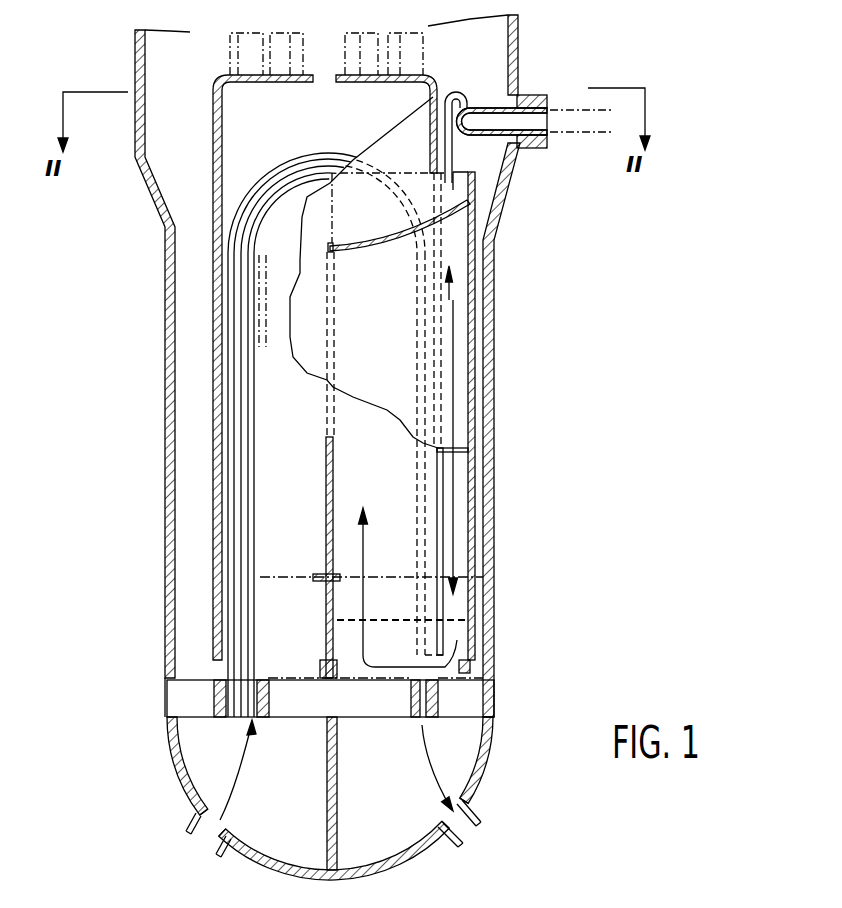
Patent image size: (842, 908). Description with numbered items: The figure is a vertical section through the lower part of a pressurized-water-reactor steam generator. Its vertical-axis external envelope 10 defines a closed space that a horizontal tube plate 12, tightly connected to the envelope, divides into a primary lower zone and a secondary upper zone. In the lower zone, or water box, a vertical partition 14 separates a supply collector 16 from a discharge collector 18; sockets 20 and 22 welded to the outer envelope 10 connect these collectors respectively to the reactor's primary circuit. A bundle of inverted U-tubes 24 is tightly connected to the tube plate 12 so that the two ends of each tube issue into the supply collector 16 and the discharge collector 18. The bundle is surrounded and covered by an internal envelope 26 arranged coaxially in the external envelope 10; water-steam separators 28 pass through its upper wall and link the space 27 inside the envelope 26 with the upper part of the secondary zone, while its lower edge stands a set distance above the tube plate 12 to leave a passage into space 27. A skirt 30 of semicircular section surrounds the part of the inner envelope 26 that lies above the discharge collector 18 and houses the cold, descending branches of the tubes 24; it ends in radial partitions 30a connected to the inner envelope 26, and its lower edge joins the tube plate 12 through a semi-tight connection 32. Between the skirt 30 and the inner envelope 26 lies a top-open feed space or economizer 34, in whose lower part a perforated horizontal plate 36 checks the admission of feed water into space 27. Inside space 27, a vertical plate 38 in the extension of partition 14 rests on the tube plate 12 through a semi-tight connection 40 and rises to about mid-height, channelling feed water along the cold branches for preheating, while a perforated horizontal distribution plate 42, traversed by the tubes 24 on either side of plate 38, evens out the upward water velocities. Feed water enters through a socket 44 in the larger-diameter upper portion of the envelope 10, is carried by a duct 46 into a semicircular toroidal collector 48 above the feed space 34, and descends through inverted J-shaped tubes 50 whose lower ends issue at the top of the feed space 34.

The external envelope 10 is at (165, 357).
The tube plate 12 is at (207, 710).
The vertical partition 14 is at (395, 762).
The supply collector 16 is at (298, 822).
The discharge collector 18 is at (398, 822).
The socket 20 is at (197, 817).
The socket 22 is at (473, 803).
The bundle of inverted U-tubes 24 is at (240, 485).
The internal envelope 26 is at (210, 207).
The space within envelope 26 27 is at (292, 132).
The water-steam separators 28 is at (398, 33).
The skirt 30 is at (477, 527).
The radial partitions / upper edge of skirt 30a is at (467, 177).
The semi-tight connection 32 is at (467, 660).
The feed space (economizer) 34 is at (457, 465).
The perforated horizontal plate 36 is at (460, 620).
The vertical plate 38 is at (327, 457).
The semi-tight connection 40 is at (320, 663).
The horizontal distribution plate 42 is at (302, 575).
The socket 44 is at (537, 90).
The duct 46 is at (493, 97).
The toroidal collector 48 is at (473, 97).
The inverted J-shaped tubes 50 is at (452, 153).